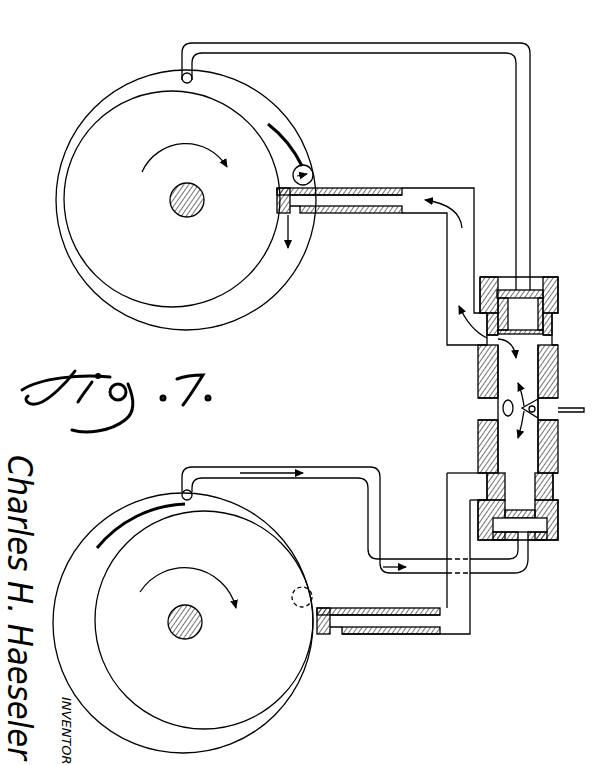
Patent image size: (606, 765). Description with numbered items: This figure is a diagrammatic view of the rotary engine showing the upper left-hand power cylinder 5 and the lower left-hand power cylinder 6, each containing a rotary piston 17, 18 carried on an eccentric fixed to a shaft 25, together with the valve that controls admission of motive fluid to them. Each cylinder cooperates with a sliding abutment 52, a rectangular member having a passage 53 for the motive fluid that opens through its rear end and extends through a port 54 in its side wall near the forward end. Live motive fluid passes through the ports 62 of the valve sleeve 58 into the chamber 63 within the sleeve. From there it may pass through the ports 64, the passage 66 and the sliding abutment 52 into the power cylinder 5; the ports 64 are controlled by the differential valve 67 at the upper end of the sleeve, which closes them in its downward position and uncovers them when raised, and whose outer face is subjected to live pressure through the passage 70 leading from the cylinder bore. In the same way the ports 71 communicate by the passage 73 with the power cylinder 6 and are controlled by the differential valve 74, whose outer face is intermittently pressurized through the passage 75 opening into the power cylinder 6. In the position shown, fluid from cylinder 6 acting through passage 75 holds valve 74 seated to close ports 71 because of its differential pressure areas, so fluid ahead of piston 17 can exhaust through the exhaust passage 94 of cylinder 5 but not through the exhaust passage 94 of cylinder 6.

The power cylinder 5 is at (283, 298).
The power cylinder 6 is at (275, 716).
The rotary piston 17 is at (172, 199).
The rotary piston 18 is at (204, 620).
The shaft 25 is at (170, 200).
The sliding abutment 52 is at (361, 189).
The passage 53 is at (371, 204).
The port 54 is at (297, 211).
The valve sleeve 58 is at (478, 372).
The ports 62 is at (478, 410).
The chamber 63 is at (512, 452).
The ports 64 is at (487, 340).
The passage 66 is at (446, 260).
The differential valve 67 is at (522, 288).
The passage 70 is at (351, 44).
The ports 71 is at (478, 481).
The passage 73 is at (462, 598).
The differential valve 74 is at (531, 528).
The passage 75 is at (313, 470).
The exhaust passage 94 is at (311, 170).